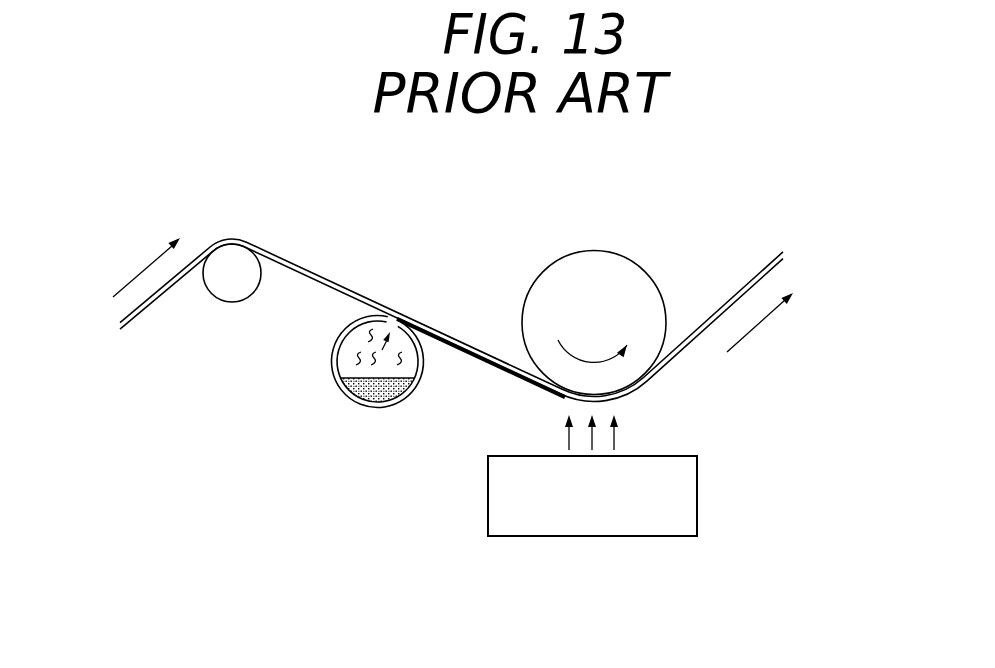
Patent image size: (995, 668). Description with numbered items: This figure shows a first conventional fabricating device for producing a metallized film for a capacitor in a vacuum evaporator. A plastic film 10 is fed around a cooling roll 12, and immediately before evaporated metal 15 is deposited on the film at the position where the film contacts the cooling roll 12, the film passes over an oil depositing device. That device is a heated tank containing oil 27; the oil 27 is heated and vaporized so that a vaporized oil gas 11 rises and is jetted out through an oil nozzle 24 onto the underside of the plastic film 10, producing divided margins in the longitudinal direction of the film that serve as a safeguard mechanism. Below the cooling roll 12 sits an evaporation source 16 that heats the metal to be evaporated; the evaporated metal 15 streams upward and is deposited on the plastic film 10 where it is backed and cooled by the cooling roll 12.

The plastic film 10 is at (300, 267).
The vaporized oil gas 11 is at (355, 350).
The cooling roll 12 is at (628, 262).
The evaporated metal 15 is at (623, 440).
The evaporation source 16 is at (697, 513).
The oil nozzle 24 is at (370, 317).
The oil 27 is at (371, 400).